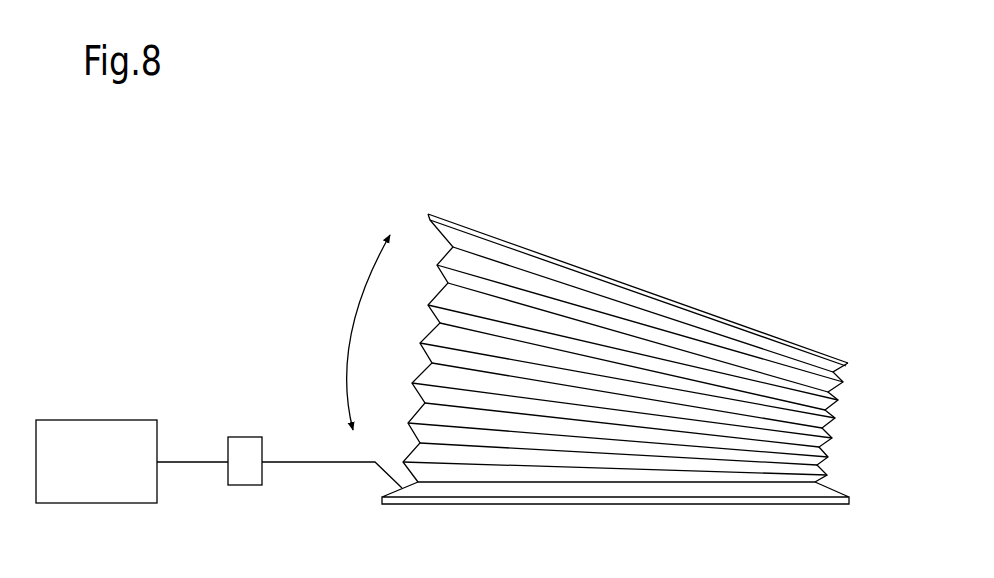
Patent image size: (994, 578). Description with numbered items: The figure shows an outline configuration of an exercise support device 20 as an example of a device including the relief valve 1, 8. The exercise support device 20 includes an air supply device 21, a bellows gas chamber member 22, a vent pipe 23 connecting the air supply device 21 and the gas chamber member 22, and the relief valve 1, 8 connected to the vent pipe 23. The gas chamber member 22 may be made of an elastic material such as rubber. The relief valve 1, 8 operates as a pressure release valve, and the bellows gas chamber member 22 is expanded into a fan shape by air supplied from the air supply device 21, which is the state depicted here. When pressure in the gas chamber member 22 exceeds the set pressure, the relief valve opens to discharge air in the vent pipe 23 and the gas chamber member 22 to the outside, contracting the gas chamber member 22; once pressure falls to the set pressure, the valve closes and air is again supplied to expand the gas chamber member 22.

The relief valve 1 is at (243, 437).
The relief valve 8 is at (245, 461).
The exercise support device 20 is at (505, 151).
The air supply device 21 is at (97, 420).
The bellows gas chamber member 22 is at (670, 298).
The vent pipe 23 is at (190, 460).